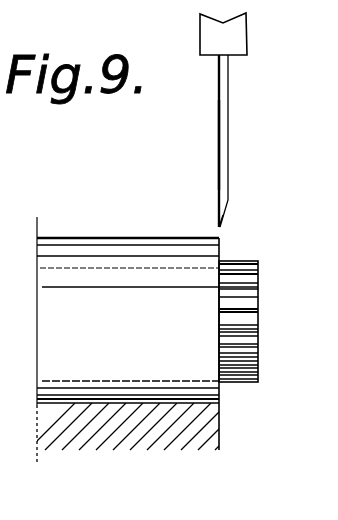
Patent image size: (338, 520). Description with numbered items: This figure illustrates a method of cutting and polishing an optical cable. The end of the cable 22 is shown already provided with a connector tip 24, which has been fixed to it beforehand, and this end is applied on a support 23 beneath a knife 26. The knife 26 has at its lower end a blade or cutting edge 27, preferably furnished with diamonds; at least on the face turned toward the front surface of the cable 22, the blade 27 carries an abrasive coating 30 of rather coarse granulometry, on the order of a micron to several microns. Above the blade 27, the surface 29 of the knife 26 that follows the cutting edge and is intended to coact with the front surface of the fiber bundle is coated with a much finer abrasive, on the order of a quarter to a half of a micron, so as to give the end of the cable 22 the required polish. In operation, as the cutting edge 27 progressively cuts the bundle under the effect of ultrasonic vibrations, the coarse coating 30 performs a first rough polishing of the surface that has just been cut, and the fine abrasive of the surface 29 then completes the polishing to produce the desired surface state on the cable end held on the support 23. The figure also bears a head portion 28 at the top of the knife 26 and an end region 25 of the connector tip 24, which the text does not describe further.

The cable 22 is at (242, 387).
The support 23 is at (187, 455).
The connector tip 24 is at (119, 283).
The end portion 25 is at (248, 300).
The knife 26 is at (228, 128).
The blade or cutting edge 27 is at (220, 227).
The needle head 28 is at (233, 33).
The surface of the knife 29 is at (218, 143).
The abrasive coating 30 is at (174, 214).